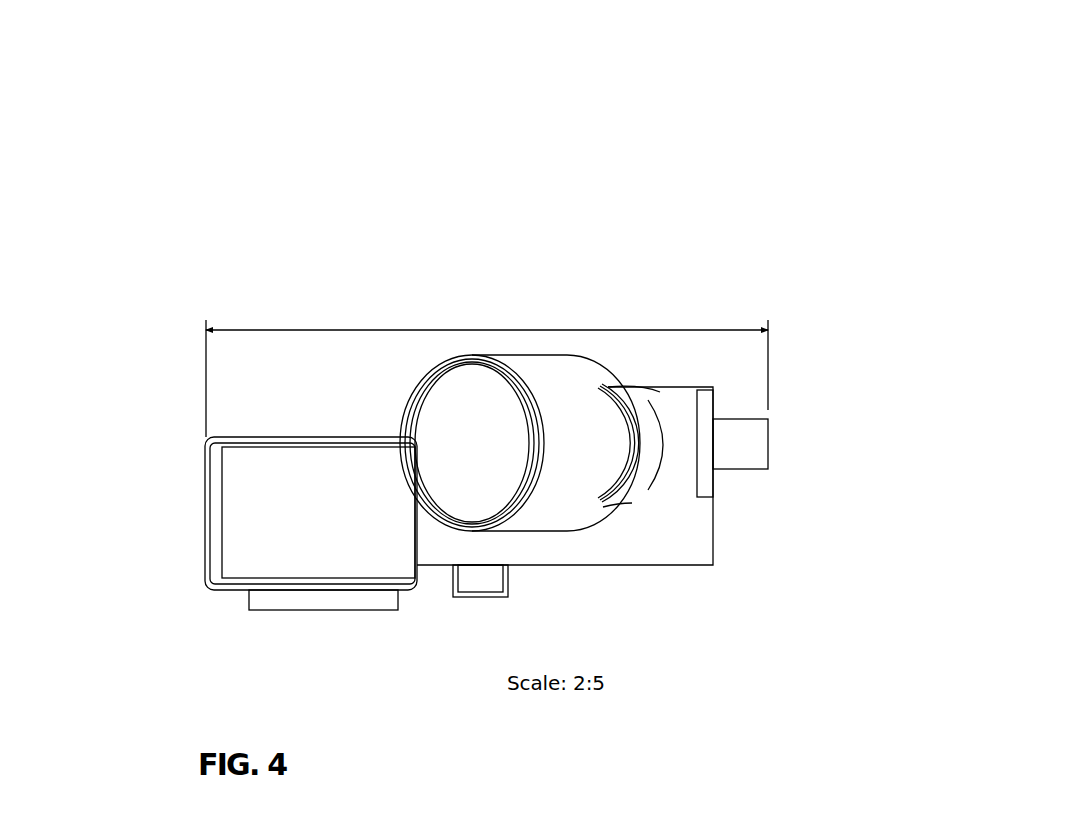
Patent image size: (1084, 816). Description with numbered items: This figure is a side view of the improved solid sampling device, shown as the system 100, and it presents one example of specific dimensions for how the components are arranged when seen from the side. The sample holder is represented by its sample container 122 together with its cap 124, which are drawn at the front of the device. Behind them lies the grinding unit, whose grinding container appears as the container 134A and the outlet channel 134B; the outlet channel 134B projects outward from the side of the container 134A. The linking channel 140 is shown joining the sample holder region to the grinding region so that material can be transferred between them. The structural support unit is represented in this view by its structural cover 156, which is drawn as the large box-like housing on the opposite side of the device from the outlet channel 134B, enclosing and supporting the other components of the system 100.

The system 100 is at (838, 82).
The sample container 122 is at (537, 378).
The cap 124 is at (637, 470).
The linking channel 140 is at (638, 403).
The container 134A is at (703, 480).
The outlet channel 134B is at (747, 448).
The structural cover 156 is at (203, 507).